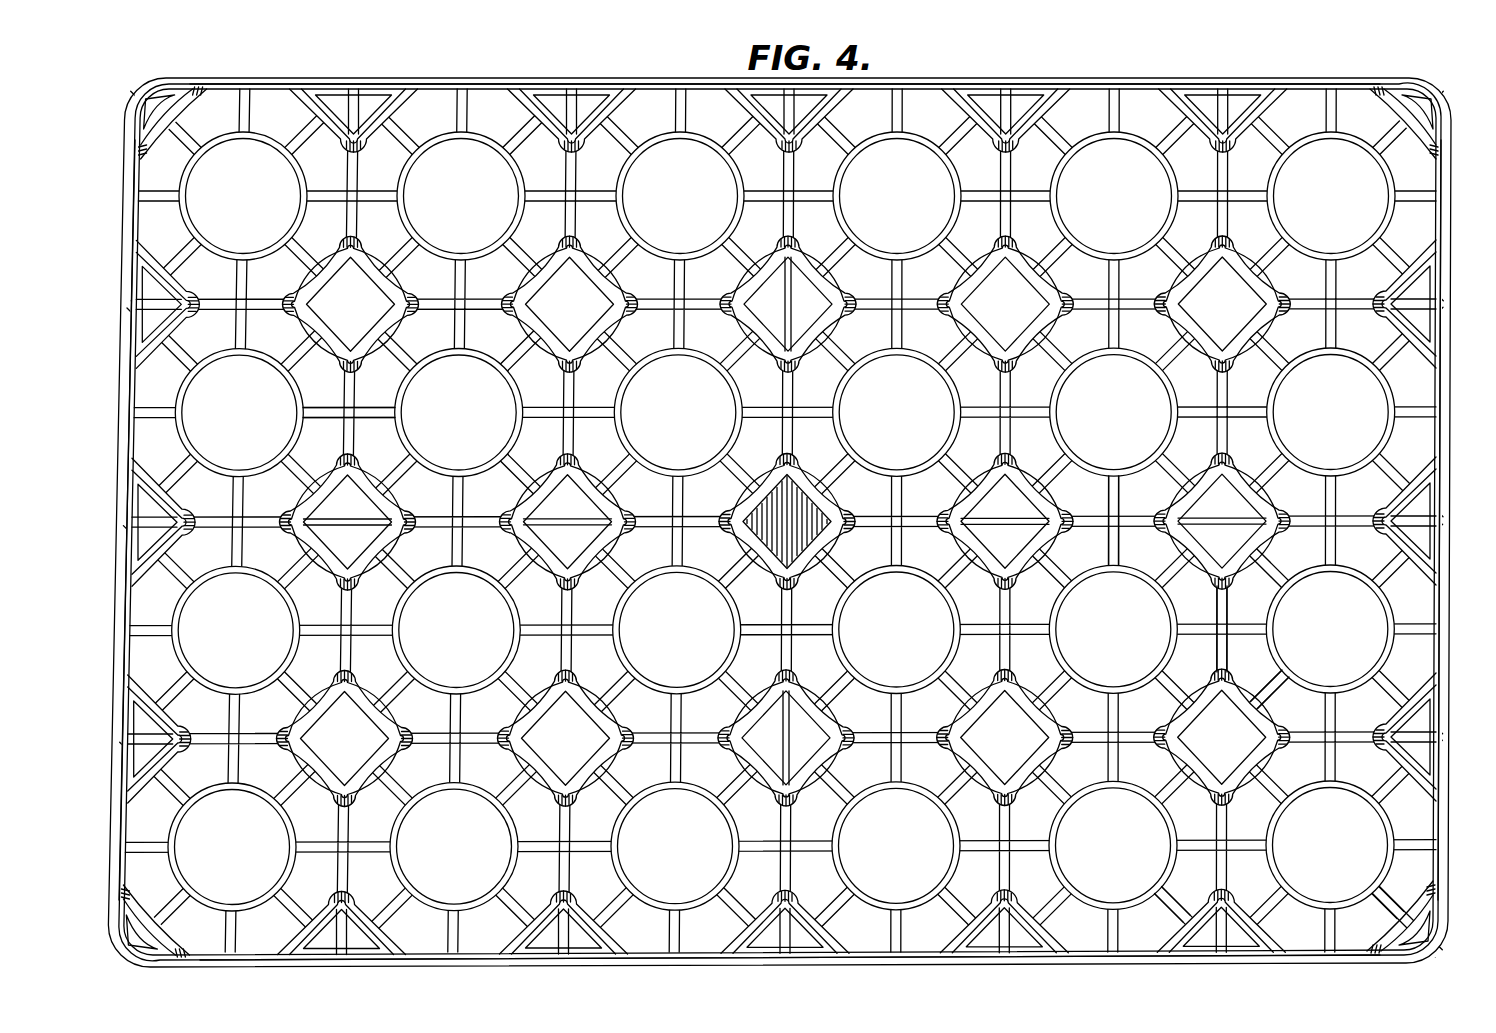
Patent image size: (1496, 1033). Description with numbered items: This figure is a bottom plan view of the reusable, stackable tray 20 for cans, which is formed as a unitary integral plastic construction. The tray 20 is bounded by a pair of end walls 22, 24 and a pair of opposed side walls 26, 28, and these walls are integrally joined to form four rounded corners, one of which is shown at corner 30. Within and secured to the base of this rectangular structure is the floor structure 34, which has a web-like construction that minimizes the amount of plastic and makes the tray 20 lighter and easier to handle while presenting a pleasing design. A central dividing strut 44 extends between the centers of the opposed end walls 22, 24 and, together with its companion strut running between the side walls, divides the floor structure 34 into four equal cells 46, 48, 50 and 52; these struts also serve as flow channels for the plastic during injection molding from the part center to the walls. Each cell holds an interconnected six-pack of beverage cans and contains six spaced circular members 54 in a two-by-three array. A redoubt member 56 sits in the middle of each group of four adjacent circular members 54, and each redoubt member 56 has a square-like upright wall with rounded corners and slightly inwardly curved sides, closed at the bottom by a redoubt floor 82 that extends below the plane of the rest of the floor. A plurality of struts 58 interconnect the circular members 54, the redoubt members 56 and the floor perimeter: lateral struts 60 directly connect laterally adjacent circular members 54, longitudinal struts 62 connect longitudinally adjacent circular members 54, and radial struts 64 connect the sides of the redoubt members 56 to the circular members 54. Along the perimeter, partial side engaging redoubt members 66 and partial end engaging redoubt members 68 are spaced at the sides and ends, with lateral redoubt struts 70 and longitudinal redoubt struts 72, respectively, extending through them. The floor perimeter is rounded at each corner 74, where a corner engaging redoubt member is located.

The tray 20 is at (1464, 332).
The end wall 22 is at (125, 122).
The end wall 24 is at (1448, 388).
The side wall 26 is at (885, 960).
The side wall 28 is at (1072, 82).
The rounded corner 30 is at (1448, 78).
The floor structure 34 is at (704, 246).
The central dividing strut 44 is at (881, 512).
The cell 46 is at (251, 872).
The cell 48 is at (250, 180).
The cell 50 is at (1366, 847).
The cell 52 is at (1362, 200).
The circular member 54 is at (437, 363).
The redoubt member 56 is at (1258, 530).
The strut 58 is at (1212, 643).
The lateral strut 60 is at (1114, 500).
The longitudinal strut 62 is at (371, 411).
The radial strut 64 is at (1270, 695).
The partial side engaging redoubt member 66 is at (1212, 918).
The partial end engaging redoubt member 68 is at (1432, 700).
The lateral redoubt strut 70 is at (787, 928).
The longitudinal redoubt strut 72 is at (1418, 513).
The corner of the floor perimeter structure 74 is at (1435, 905).
The redoubt floor 82 is at (828, 720).